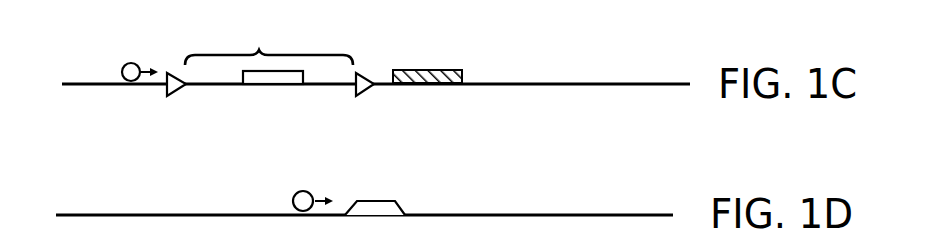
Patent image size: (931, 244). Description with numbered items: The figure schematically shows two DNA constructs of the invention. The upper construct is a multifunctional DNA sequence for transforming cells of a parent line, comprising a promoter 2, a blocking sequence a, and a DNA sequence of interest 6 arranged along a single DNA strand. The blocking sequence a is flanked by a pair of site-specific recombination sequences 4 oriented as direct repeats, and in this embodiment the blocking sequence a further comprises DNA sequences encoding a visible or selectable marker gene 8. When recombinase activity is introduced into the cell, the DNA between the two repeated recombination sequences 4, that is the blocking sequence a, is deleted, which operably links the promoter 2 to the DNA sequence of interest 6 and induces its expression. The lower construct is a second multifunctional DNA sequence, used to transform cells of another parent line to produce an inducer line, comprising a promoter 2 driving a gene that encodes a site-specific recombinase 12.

In FIG. 1C, the promoter 2 is at (131, 62).
In FIG. 1D, the promoter 2 is at (308, 194).
In FIG. 1C, the site-specific recombination sequences 4 is at (172, 72).
In FIG. 1C, the DNA sequence of interest 6 is at (428, 68).
In FIG. 1C, the selectable marker gene 8 is at (268, 78).
In FIG. 1D, the gene encoding a site-specific recombinase 12 is at (388, 198).
In FIG. 1C, the blocking sequence a is at (269, 41).